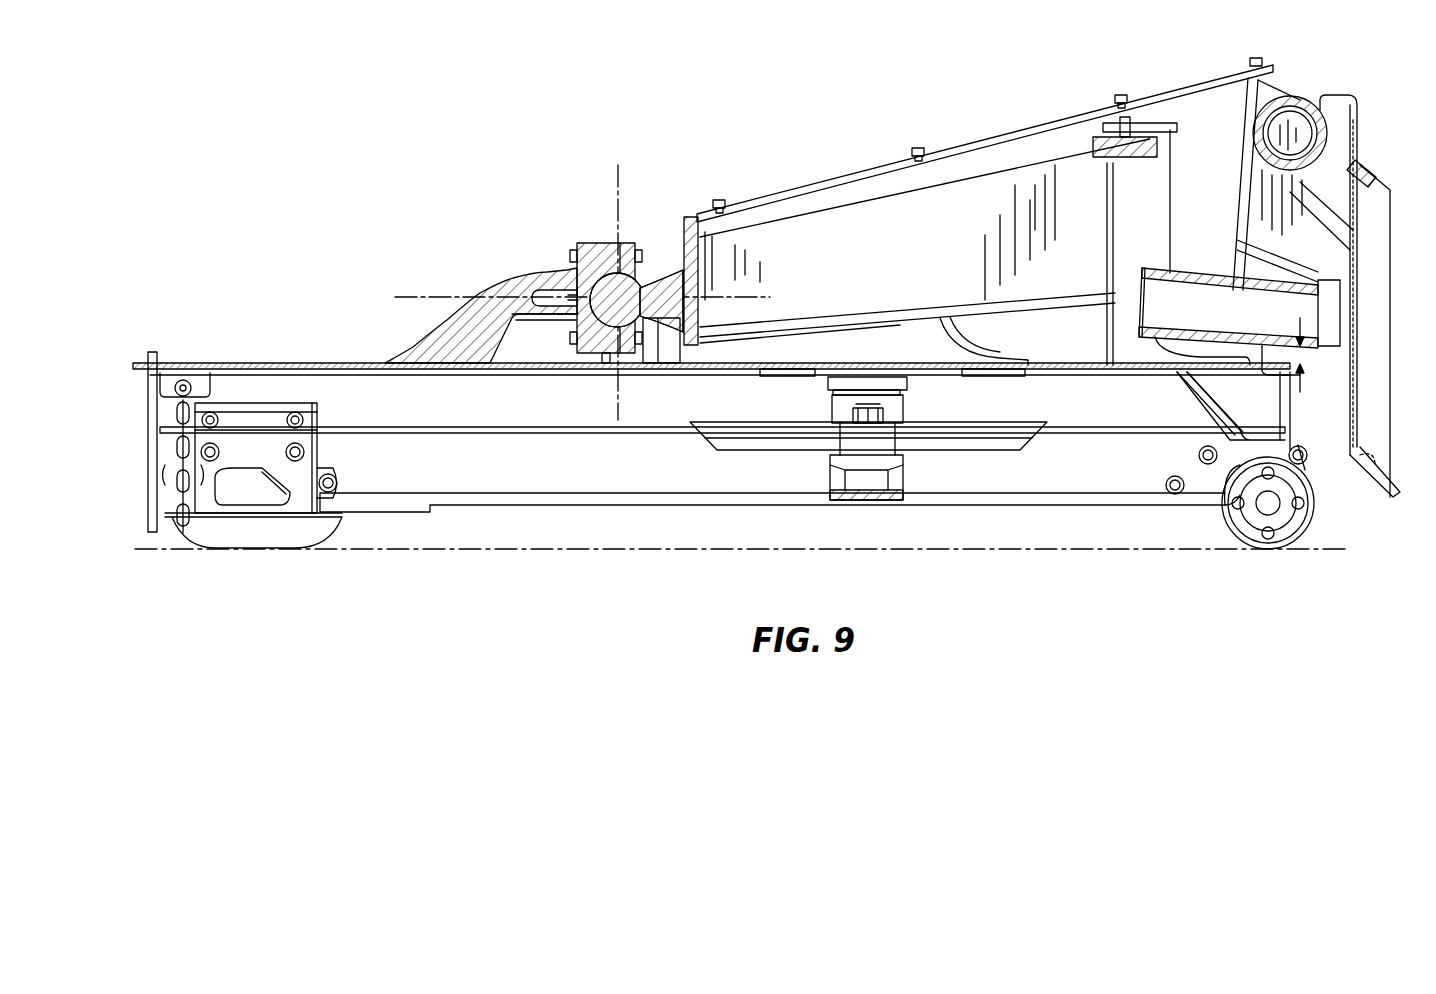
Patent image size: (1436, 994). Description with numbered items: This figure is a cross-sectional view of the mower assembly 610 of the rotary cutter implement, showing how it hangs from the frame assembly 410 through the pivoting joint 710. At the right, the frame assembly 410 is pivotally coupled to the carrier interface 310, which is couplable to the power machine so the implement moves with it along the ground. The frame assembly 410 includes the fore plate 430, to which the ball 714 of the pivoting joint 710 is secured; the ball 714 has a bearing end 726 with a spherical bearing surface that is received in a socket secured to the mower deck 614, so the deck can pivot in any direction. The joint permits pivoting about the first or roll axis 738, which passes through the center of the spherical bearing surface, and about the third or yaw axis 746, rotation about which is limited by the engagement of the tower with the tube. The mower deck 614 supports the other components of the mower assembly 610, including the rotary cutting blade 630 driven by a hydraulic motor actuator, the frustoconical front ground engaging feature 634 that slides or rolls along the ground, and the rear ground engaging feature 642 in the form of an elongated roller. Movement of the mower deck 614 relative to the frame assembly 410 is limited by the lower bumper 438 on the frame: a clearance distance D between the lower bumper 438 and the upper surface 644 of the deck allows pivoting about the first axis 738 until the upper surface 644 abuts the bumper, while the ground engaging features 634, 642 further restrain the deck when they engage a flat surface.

The carrier interface 310 is at (1390, 150).
The frame assembly 410 is at (970, 108).
The fore plate 430 is at (687, 240).
The left lower bumper 438 is at (1243, 345).
The mower assembly 610 is at (237, 333).
The mower deck 614 is at (313, 363).
The right rotary cutting blade 630 is at (822, 483).
The left front ground engaging feature 634 is at (272, 542).
The rear ground engaging feature 642 is at (1308, 530).
The upper surface 644 is at (1207, 365).
The pivoting joint 710 is at (570, 215).
The ball 714 is at (656, 275).
The bearing end 726 is at (585, 268).
The first axis 738 is at (428, 296).
The third axis 746 is at (612, 190).
The clearance distance D is at (1307, 387).